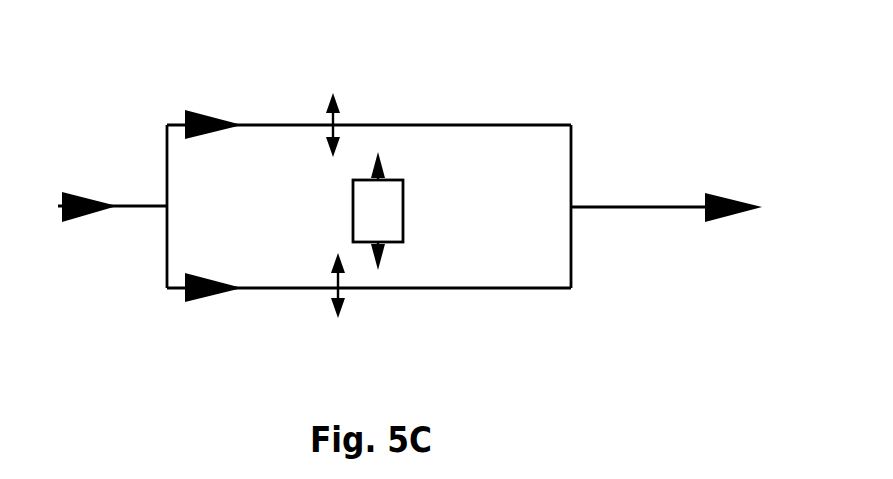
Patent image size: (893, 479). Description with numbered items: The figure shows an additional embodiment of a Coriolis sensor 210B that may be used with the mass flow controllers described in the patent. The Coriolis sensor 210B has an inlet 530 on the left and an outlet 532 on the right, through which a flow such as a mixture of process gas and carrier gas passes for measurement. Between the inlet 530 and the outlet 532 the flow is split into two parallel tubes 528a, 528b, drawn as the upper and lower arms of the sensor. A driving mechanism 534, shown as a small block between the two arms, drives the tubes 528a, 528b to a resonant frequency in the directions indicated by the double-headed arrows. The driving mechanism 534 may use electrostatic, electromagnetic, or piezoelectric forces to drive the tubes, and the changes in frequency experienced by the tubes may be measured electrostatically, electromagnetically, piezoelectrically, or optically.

The Coriolis sensor 210B is at (437, 191).
The parallel tube 528a is at (467, 125).
The parallel tube 528b is at (467, 288).
The driving mechanism 534 is at (403, 202).
The inlet 530 is at (62, 222).
The outlet 532 is at (713, 222).